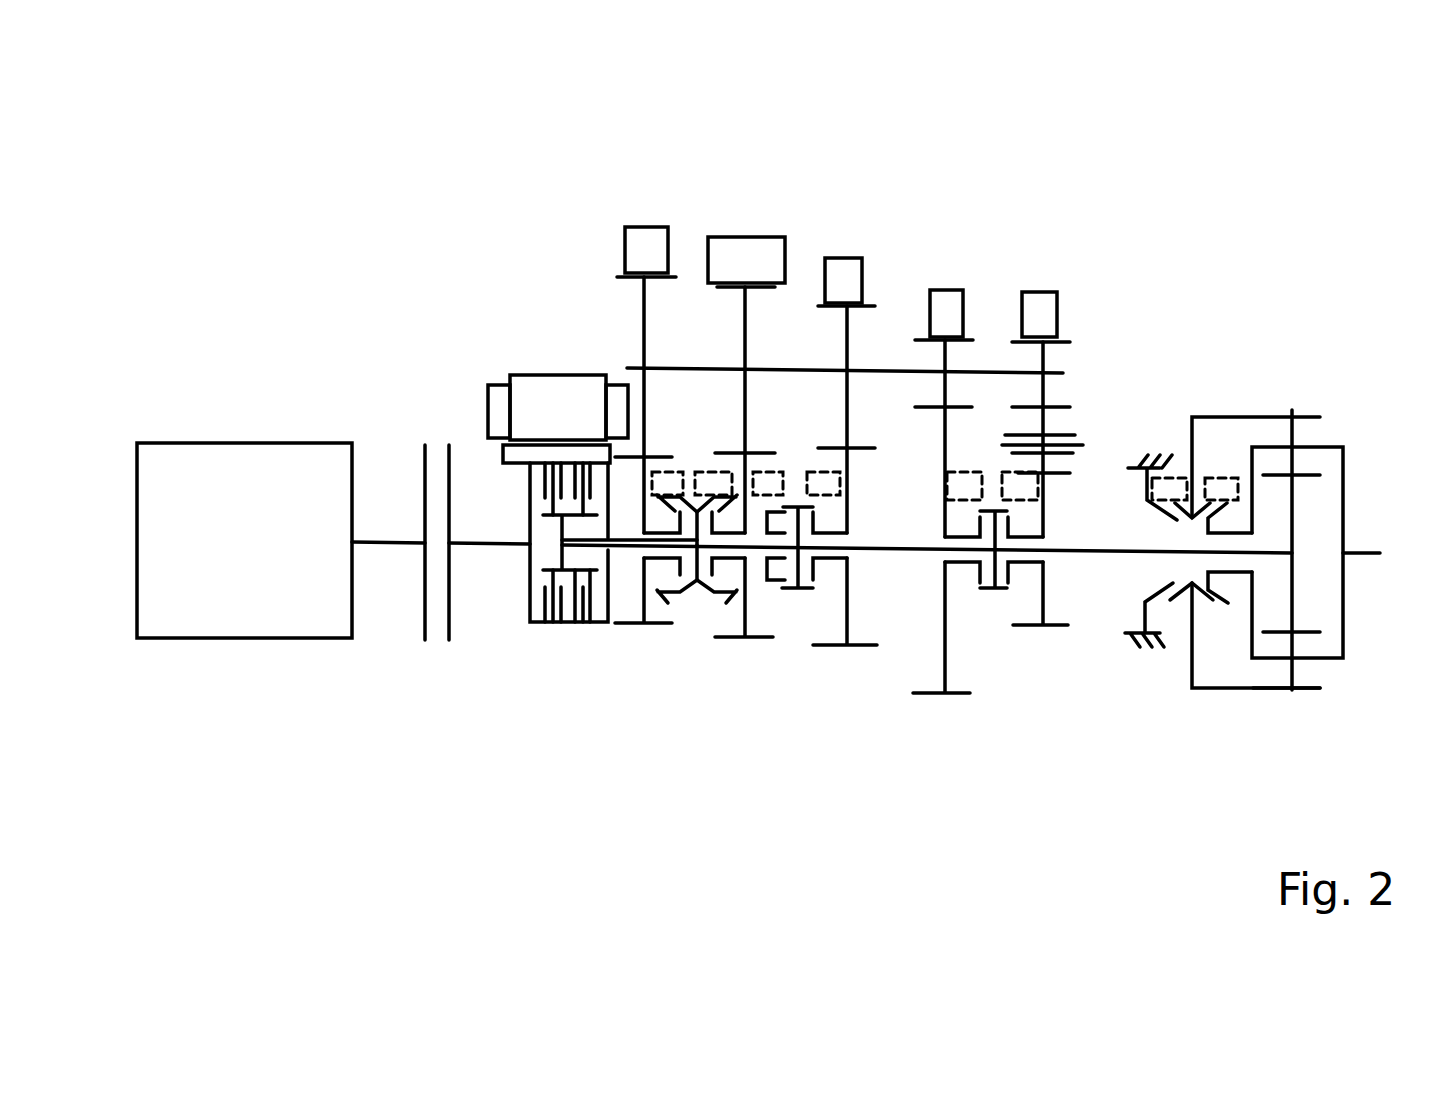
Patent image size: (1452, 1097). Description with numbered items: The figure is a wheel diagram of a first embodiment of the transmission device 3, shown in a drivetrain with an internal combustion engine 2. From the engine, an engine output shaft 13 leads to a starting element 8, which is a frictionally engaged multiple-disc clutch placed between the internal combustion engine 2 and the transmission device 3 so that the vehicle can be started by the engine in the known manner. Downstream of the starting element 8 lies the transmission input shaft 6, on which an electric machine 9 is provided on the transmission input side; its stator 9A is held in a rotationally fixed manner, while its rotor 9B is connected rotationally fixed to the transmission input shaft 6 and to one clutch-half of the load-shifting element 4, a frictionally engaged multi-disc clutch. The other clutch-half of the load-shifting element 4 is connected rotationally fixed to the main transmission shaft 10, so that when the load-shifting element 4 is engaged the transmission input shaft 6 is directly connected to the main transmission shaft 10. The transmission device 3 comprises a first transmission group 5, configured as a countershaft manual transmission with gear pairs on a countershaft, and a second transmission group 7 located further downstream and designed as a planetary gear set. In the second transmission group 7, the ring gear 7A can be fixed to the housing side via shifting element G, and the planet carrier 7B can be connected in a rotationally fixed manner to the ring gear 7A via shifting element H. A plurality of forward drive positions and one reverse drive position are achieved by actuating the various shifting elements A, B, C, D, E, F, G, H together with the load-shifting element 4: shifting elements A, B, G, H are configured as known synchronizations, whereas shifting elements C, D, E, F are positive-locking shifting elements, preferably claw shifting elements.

The internal combustion engine 2 is at (238, 463).
The transmission device 3 is at (350, 220).
The load-shifting element 4 is at (522, 505).
The first transmission group 5 is at (638, 207).
The transmission input shaft 6 is at (490, 548).
The second transmission group 7 is at (1316, 439).
The ring gear 7A is at (1293, 417).
The planet carrier 7B is at (1323, 447).
The starting element 8 is at (446, 663).
The electric machine 9 is at (536, 320).
The stator 9A is at (527, 393).
The rotor 9B is at (510, 455).
The main transmission shaft 10 is at (890, 548).
The engine output shaft 13 is at (395, 548).
The shifting element A is at (663, 593).
The shifting element B is at (718, 598).
The shifting element C is at (765, 593).
The shifting element D is at (822, 595).
The shifting element E is at (972, 585).
The shifting element F is at (1018, 590).
The shifting element G is at (1163, 602).
The shifting element H is at (1218, 600).